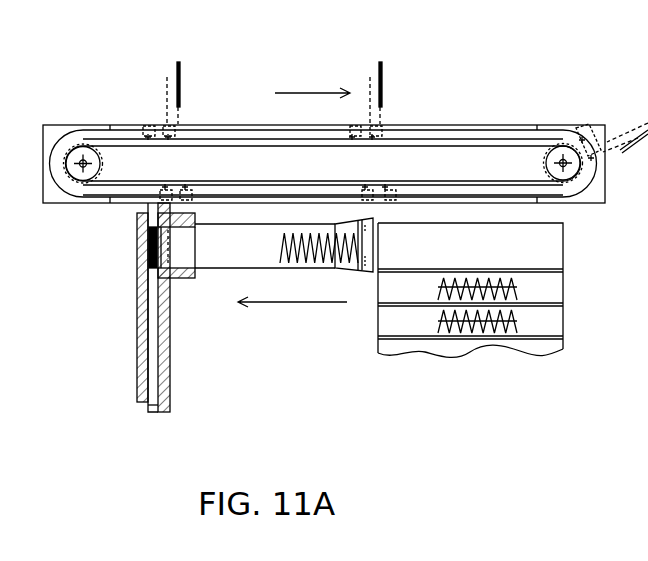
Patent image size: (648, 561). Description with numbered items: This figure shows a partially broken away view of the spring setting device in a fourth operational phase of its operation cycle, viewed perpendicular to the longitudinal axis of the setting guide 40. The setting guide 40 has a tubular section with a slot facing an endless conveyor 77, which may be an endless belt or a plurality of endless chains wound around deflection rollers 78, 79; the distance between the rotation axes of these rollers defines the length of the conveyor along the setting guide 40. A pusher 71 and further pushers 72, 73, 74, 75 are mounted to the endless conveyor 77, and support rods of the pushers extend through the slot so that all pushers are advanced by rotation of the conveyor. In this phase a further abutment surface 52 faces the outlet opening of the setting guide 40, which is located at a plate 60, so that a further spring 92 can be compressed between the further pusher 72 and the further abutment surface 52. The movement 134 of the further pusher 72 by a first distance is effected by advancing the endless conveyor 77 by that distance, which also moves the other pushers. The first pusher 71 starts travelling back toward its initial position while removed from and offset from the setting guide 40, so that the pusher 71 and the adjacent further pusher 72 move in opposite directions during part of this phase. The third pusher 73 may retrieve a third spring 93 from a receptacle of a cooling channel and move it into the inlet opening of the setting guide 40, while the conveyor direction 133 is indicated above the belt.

The setting guide 40 is at (215, 270).
The further abutment surface 52 is at (140, 266).
The plate 60 is at (150, 410).
The pusher 71 is at (179, 72).
The further pusher 72 is at (160, 256).
The third pusher 73 is at (360, 264).
The further pusher 74 is at (647, 115).
The further pusher 75 is at (382, 70).
The endless conveyor 77 is at (464, 147).
The deflection roller 78 is at (567, 153).
The deflection roller 79 is at (90, 146).
The further spring 92 is at (150, 235).
The third spring 93 is at (284, 257).
The belt travel direction 133 is at (305, 93).
The movement 134 is at (306, 305).